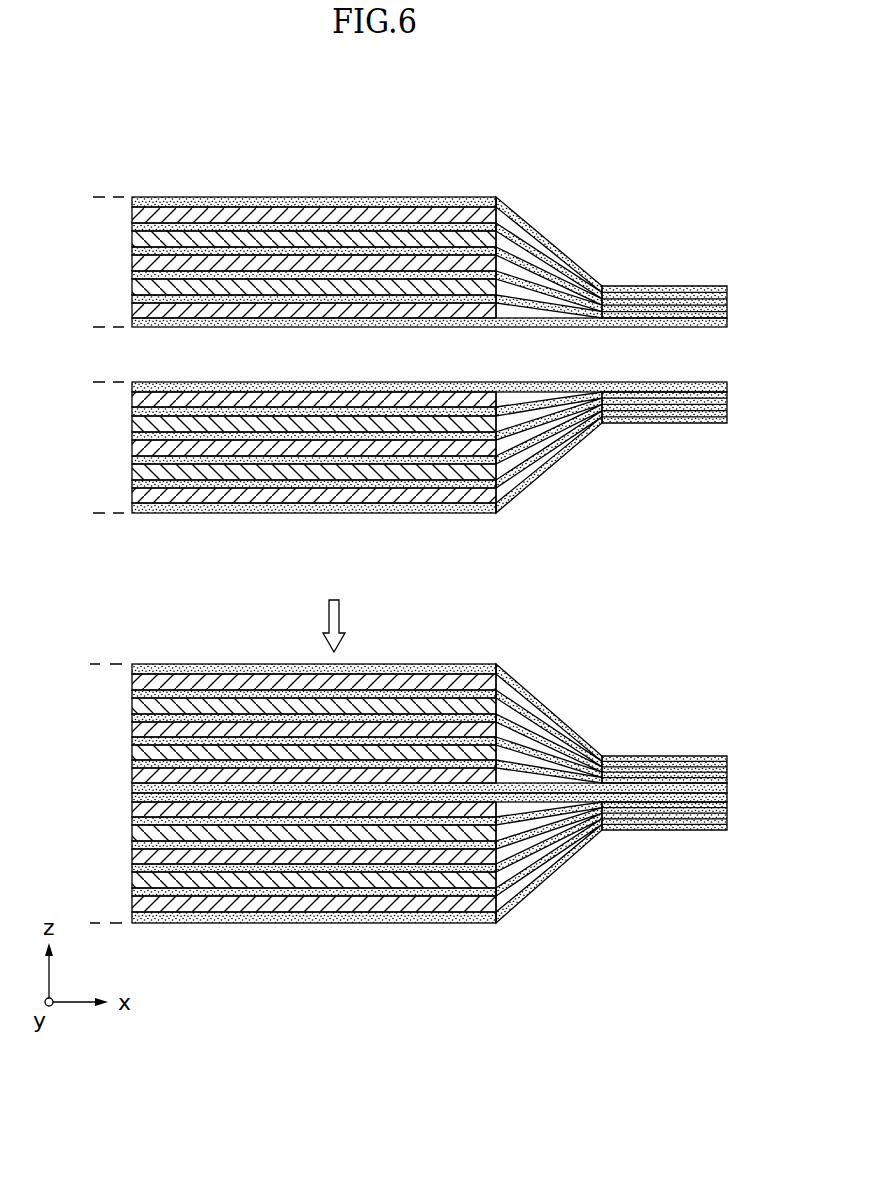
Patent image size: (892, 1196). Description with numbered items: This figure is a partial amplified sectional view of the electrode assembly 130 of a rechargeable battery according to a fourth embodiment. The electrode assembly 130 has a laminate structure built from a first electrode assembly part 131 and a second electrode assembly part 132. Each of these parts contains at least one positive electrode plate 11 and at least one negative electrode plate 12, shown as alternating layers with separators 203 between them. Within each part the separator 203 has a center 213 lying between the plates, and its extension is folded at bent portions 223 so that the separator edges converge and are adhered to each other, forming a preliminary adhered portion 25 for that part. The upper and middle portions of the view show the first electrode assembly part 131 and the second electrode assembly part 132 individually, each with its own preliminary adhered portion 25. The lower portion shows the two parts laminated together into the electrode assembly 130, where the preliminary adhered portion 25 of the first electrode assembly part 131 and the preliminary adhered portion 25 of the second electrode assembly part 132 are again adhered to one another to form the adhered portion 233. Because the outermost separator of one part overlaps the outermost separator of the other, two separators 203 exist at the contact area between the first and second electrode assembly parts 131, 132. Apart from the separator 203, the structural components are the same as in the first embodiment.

The electrode assembly 130 is at (418, 932).
The first electrode assembly part 131 is at (205, 190).
The second electrode assembly part 132 is at (204, 520).
The positive electrode plate 11 is at (353, 212).
The negative electrode plate 12 is at (285, 247).
The separator 203 is at (592, 559).
The center of the separator 213 is at (480, 197).
The bent portions of the extension of the separator 223 is at (540, 240).
The preliminary adhered portion 25 is at (625, 286).
The adhered portion 233 is at (637, 832).